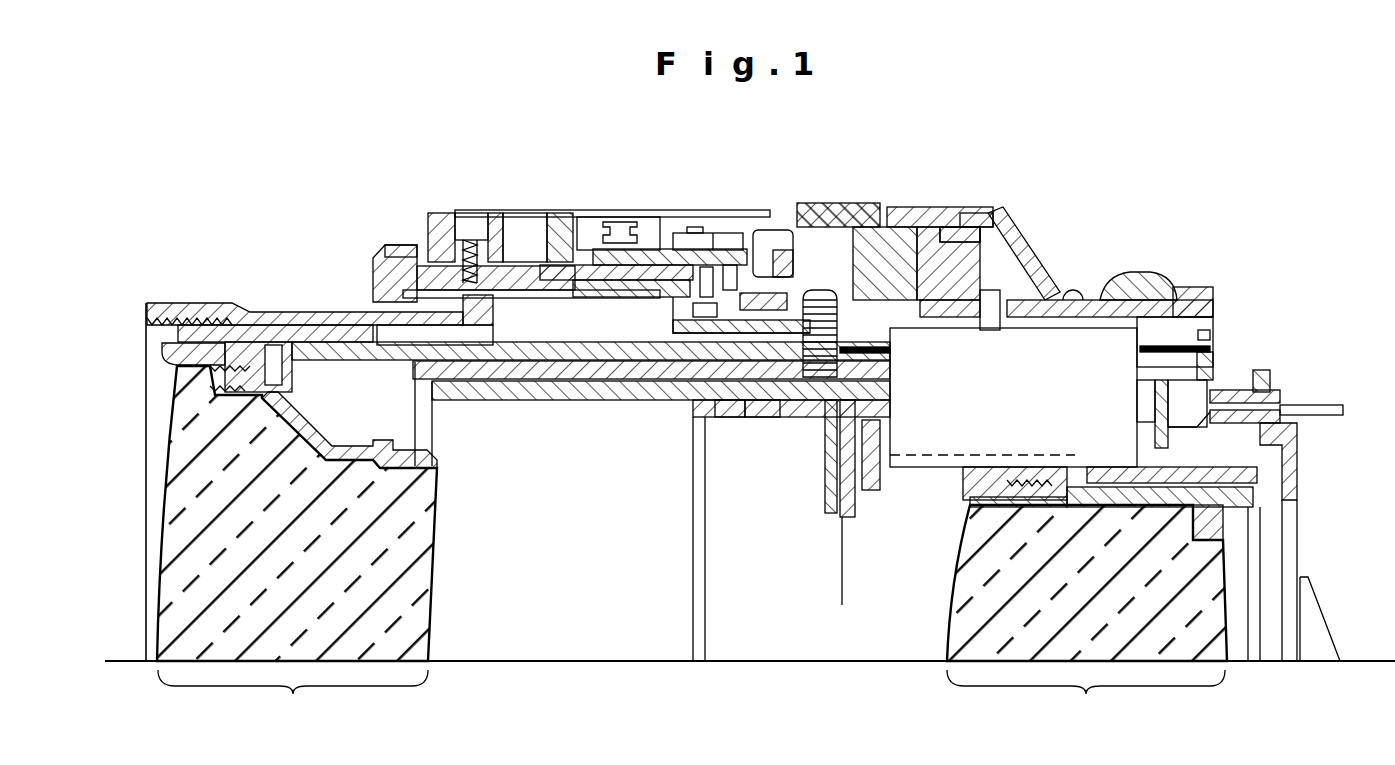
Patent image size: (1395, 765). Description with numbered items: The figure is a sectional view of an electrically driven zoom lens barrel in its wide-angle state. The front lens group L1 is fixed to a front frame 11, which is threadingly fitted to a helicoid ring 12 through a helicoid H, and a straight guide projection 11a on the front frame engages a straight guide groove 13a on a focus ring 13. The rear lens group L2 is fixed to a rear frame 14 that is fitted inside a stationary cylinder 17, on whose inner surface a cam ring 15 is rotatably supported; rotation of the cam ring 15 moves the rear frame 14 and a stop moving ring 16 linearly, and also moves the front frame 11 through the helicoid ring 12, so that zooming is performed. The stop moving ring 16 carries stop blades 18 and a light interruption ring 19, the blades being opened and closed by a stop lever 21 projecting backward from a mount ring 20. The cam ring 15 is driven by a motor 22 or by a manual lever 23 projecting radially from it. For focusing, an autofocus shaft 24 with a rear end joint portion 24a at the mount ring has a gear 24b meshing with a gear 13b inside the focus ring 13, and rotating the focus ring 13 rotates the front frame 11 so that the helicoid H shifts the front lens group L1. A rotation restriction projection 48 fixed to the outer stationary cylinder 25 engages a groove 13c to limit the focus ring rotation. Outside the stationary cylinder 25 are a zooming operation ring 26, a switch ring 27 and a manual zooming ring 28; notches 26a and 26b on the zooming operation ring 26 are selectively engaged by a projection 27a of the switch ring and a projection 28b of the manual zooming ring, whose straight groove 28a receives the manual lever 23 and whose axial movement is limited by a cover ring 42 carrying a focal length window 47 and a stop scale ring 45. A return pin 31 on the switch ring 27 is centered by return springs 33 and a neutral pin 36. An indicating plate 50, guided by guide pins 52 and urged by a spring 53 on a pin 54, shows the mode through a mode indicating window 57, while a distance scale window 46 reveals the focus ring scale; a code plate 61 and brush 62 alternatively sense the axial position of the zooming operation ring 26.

The front frame 11 is at (243, 330).
The straight guide projection 11a is at (395, 248).
The helicoid ring 12 is at (455, 355).
The focus ring 13 is at (378, 268).
The straight guide groove 13a is at (557, 235).
The gear 13b is at (890, 335).
The groove 13c is at (490, 315).
The rear frame 14 is at (1140, 512).
The cam ring 15 is at (545, 375).
The stop moving ring 16 is at (748, 420).
The stationary cylinder 17 is at (613, 392).
The stop blades 18 is at (842, 570).
The light interruption ring 19 is at (1297, 445).
The mount ring 20 is at (1262, 372).
The stop lever 21 is at (1300, 408).
The motor 22 is at (997, 422).
The manual lever 23 is at (1055, 290).
The autofocus shaft 24 is at (1190, 320).
The rear end joint portion 24a is at (1210, 335).
The gear 24b is at (830, 420).
The stationary cylinder 25 is at (530, 240).
The zooming operation ring 26 is at (815, 205).
The notches 26a is at (840, 255).
The notches 26b is at (930, 232).
The switch ring 27 is at (660, 250).
The projection 27a is at (735, 270).
The manual zooming ring 28 is at (990, 230).
The straight groove 28a is at (1040, 255).
The projection 28b is at (960, 234).
The return pin 31 is at (700, 300).
The return springs 33 is at (733, 420).
The neutral pin 36 is at (765, 420).
The cover ring 42 is at (1000, 300).
The stop scale ring 45 is at (1145, 280).
The distance scale window 46 is at (505, 235).
The focal length window 47 is at (968, 220).
The rotation restriction projection 48 is at (440, 240).
The indicating plate 50 is at (690, 212).
The guide pins 52 is at (700, 233).
The spring 53 is at (647, 235).
The pin 54 is at (612, 222).
The mode indicating window 57 is at (745, 230).
The code plate 61 is at (885, 350).
The brush 62 is at (880, 215).
The helicoid H is at (296, 330).
The front lens group L1 is at (297, 549).
The rear lens group L2 is at (1087, 618).